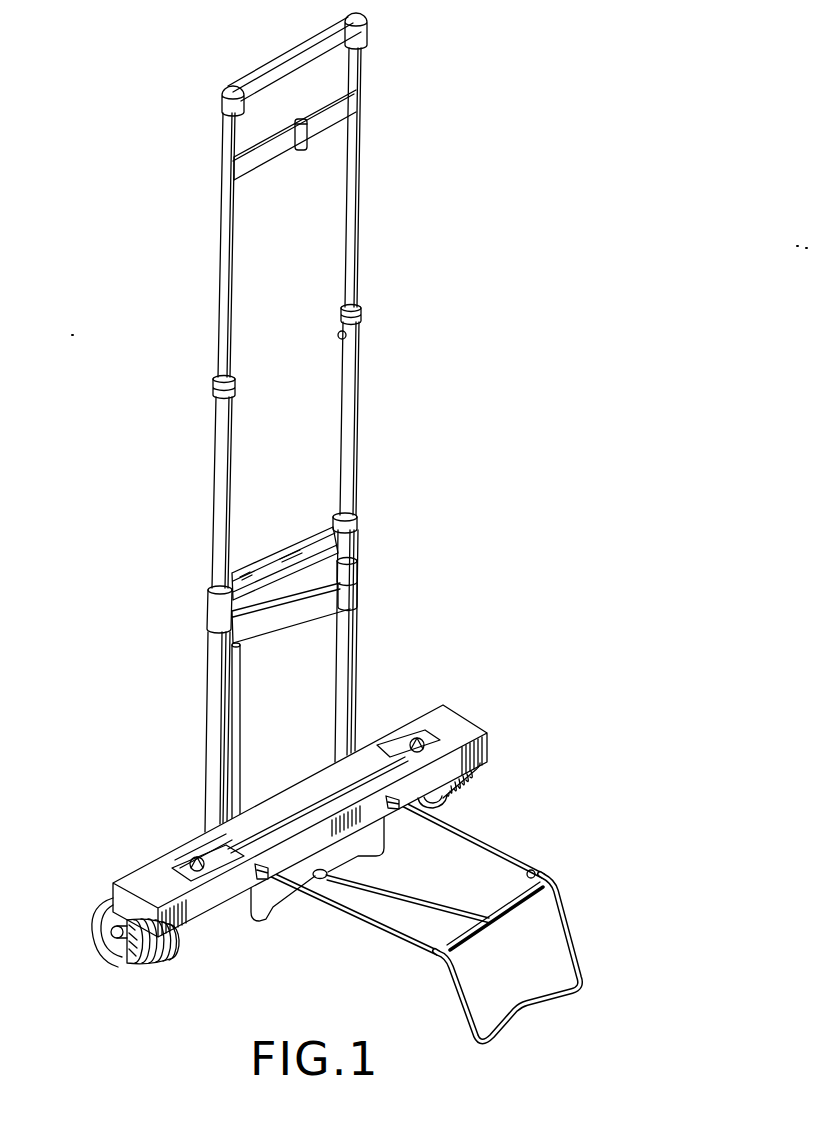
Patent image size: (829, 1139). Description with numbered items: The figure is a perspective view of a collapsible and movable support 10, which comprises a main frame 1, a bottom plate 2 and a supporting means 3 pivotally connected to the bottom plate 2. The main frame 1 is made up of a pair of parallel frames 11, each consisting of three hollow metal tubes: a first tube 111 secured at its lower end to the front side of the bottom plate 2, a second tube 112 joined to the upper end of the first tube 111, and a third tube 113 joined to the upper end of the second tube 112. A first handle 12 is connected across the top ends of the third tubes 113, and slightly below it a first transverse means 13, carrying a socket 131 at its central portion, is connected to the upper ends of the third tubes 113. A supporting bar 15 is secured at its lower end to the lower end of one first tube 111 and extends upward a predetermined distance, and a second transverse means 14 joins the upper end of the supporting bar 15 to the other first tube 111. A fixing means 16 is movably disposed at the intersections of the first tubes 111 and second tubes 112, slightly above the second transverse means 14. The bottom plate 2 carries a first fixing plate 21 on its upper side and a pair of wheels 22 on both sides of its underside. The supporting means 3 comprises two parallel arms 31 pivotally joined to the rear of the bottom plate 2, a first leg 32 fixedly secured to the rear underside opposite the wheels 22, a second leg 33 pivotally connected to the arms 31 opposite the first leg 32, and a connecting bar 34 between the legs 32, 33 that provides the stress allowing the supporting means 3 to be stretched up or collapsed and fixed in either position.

The main frame 1 is at (415, 373).
The collapsible and movable support 10 is at (395, 32).
The first handle 12 is at (300, 58).
The first transverse means 13 is at (363, 106).
The socket 131 is at (297, 120).
The third tube 113 is at (363, 200).
The frame 11 is at (378, 333).
The second tube 112 is at (360, 428).
The first tube 111 is at (357, 672).
The fixing means 16 is at (290, 545).
The second transverse means 14 is at (357, 598).
The supporting bar 15 is at (236, 756).
The bottom plate 2 is at (462, 718).
The first fixing plate 21 is at (383, 758).
The wheel 22 is at (478, 775).
The supporting means 3 is at (575, 902).
The arm 31 is at (493, 842).
The first leg 32 is at (270, 914).
The second leg 33 is at (500, 1022).
The connecting bar 34 is at (440, 906).